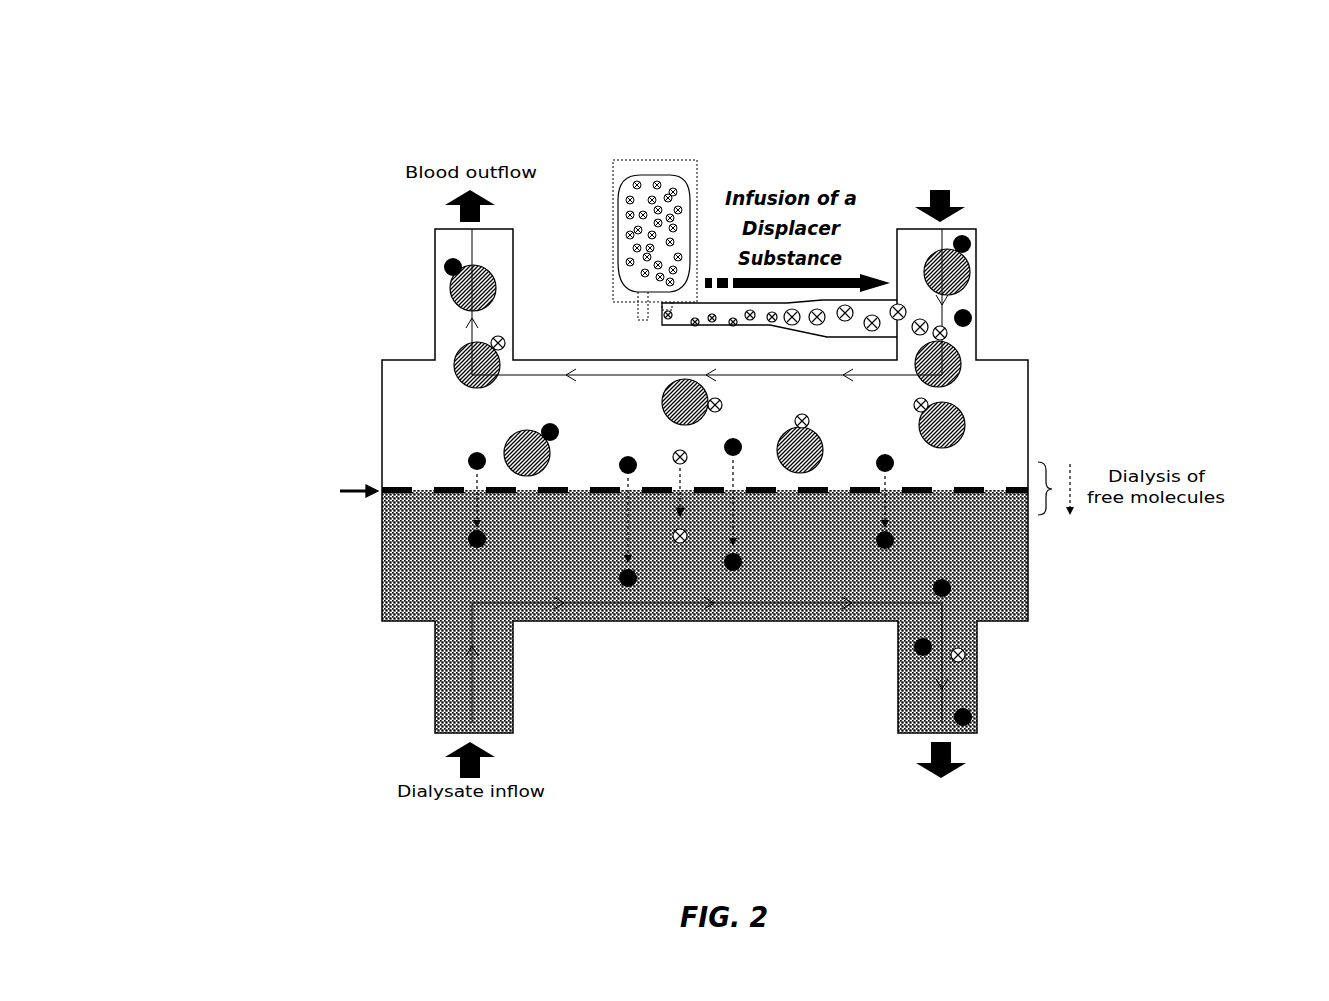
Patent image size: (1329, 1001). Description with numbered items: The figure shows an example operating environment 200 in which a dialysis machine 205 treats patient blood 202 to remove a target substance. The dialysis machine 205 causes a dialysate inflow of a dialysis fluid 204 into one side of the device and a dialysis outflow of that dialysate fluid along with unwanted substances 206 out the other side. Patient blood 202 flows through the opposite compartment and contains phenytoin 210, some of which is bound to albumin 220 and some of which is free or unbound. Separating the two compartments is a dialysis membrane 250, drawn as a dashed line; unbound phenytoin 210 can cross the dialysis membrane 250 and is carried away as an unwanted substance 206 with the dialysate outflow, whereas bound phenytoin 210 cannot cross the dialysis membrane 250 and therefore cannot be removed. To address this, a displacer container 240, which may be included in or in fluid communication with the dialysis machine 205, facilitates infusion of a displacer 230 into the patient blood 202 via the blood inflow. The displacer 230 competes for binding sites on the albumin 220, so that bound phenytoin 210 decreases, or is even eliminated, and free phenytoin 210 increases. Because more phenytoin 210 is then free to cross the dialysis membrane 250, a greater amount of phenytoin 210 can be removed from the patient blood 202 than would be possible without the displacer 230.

The operating environment 200 is at (741, 33).
The patient blood 202 is at (1018, 441).
The dialysis fluid 204 is at (1018, 597).
The dialysis machine 205 is at (978, 133).
The unwanted substances 206 is at (905, 680).
The phenytoin 210 is at (1278, 215).
The albumin 220 is at (1170, 258).
The displacer 230 is at (620, 205).
The displacer container 240 is at (822, 101).
The dialysis membrane 250 is at (265, 561).